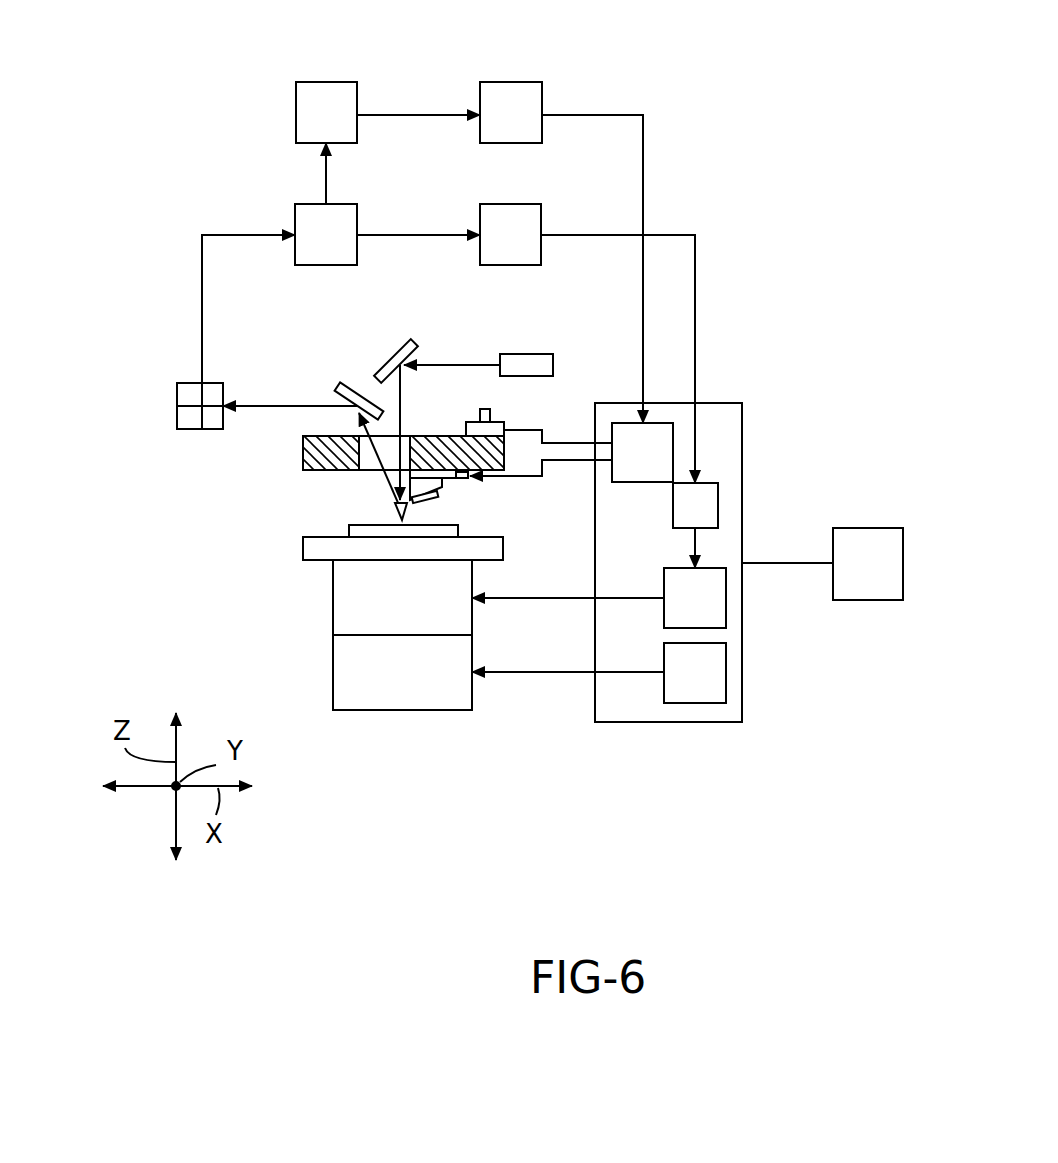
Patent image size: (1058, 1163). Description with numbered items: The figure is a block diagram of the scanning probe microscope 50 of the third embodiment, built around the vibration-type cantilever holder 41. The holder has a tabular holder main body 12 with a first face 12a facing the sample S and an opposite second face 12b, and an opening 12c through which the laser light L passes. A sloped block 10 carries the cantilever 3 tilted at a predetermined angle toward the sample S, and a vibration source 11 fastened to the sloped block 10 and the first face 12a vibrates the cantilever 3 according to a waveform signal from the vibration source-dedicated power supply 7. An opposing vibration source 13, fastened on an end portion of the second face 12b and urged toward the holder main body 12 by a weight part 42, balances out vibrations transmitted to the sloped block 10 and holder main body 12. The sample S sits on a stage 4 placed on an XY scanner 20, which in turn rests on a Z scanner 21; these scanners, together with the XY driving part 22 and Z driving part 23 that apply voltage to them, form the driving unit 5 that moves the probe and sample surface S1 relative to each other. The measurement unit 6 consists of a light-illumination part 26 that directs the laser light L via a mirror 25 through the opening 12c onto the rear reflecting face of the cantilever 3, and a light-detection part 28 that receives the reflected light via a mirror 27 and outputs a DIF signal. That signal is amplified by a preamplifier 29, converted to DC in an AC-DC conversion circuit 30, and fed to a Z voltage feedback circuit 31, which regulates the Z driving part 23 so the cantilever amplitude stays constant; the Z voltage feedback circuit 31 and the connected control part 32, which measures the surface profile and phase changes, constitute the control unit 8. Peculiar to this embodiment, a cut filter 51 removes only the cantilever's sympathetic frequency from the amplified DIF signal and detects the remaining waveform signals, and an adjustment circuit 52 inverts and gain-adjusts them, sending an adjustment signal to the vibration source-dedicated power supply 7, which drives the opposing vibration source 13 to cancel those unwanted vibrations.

The scanning probe microscope 50 is at (873, 40).
The cut filter 51 is at (330, 88).
The adjustment circuit 52 is at (514, 87).
The preamplifier 29 is at (352, 217).
The AC-DC conversion circuit 30 is at (535, 217).
The light-detection part 28 is at (213, 392).
The light-illumination part 26 is at (527, 358).
The measurement unit 6 is at (555, 342).
The laser light L is at (452, 365).
The mirror 25 is at (395, 357).
The mirror 27 is at (356, 394).
The holder main body 12 is at (366, 466).
The first face 12a is at (310, 470).
The second face 12b is at (310, 437).
The opening 12c is at (358, 472).
The opposing vibration source 13 is at (466, 428).
The weight part 42 is at (480, 412).
The vibration-type cantilever holder 41 is at (505, 420).
The vibration source 11 is at (470, 482).
The sloped block 10 is at (442, 490).
The cantilever 3 is at (435, 505).
The sample S is at (353, 530).
The sample surface S1 is at (352, 525).
The stage 4 is at (303, 548).
The XY scanner 20 is at (333, 597).
The Z scanner 21 is at (333, 672).
The driving unit 5 is at (402, 716).
The control unit 8 is at (722, 554).
The vibration source-dedicated power supply 7 is at (645, 484).
The Z voltage feedback circuit 31 is at (714, 505).
The XY driving part 22 is at (722, 597).
The Z driving part 23 is at (722, 672).
The control part 32 is at (870, 532).